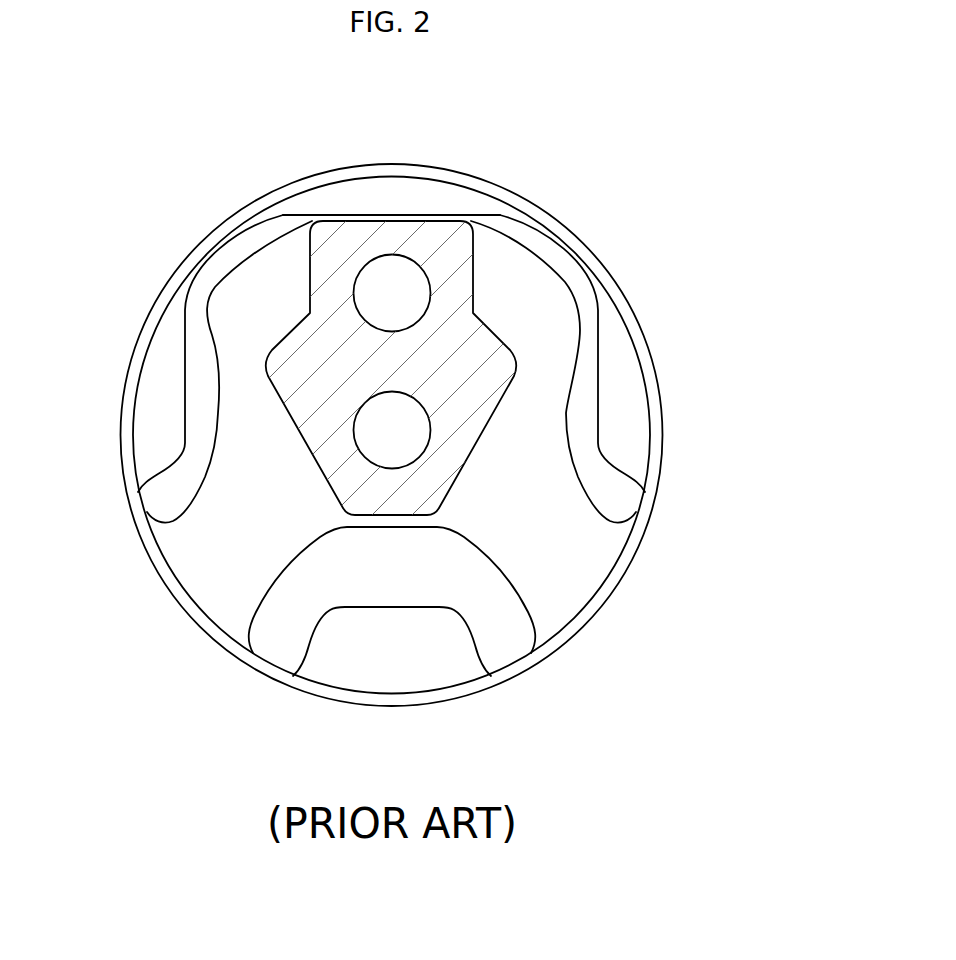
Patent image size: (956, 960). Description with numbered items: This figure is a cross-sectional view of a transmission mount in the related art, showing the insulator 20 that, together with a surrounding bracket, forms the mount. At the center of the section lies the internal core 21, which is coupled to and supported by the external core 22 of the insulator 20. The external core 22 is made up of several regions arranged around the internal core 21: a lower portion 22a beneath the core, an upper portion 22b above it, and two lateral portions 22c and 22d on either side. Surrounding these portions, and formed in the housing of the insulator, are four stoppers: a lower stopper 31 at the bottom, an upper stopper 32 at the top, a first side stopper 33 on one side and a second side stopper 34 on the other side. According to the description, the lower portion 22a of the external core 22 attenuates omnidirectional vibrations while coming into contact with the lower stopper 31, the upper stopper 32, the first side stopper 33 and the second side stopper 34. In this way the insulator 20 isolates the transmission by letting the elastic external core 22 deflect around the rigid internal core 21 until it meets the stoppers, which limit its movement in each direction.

The insulator 20 is at (643, 135).
The internal core 21 is at (444, 244).
The external core 22 is at (396, 424).
The lower portion 22a is at (318, 524).
The upper portion 22b is at (296, 247).
The lateral portion 22c is at (241, 391).
The lateral portion 22d is at (550, 388).
The lower stopper 31 is at (396, 654).
The upper stopper 32 is at (374, 198).
The first side stopper 33 is at (159, 428).
The second side stopper 34 is at (623, 428).